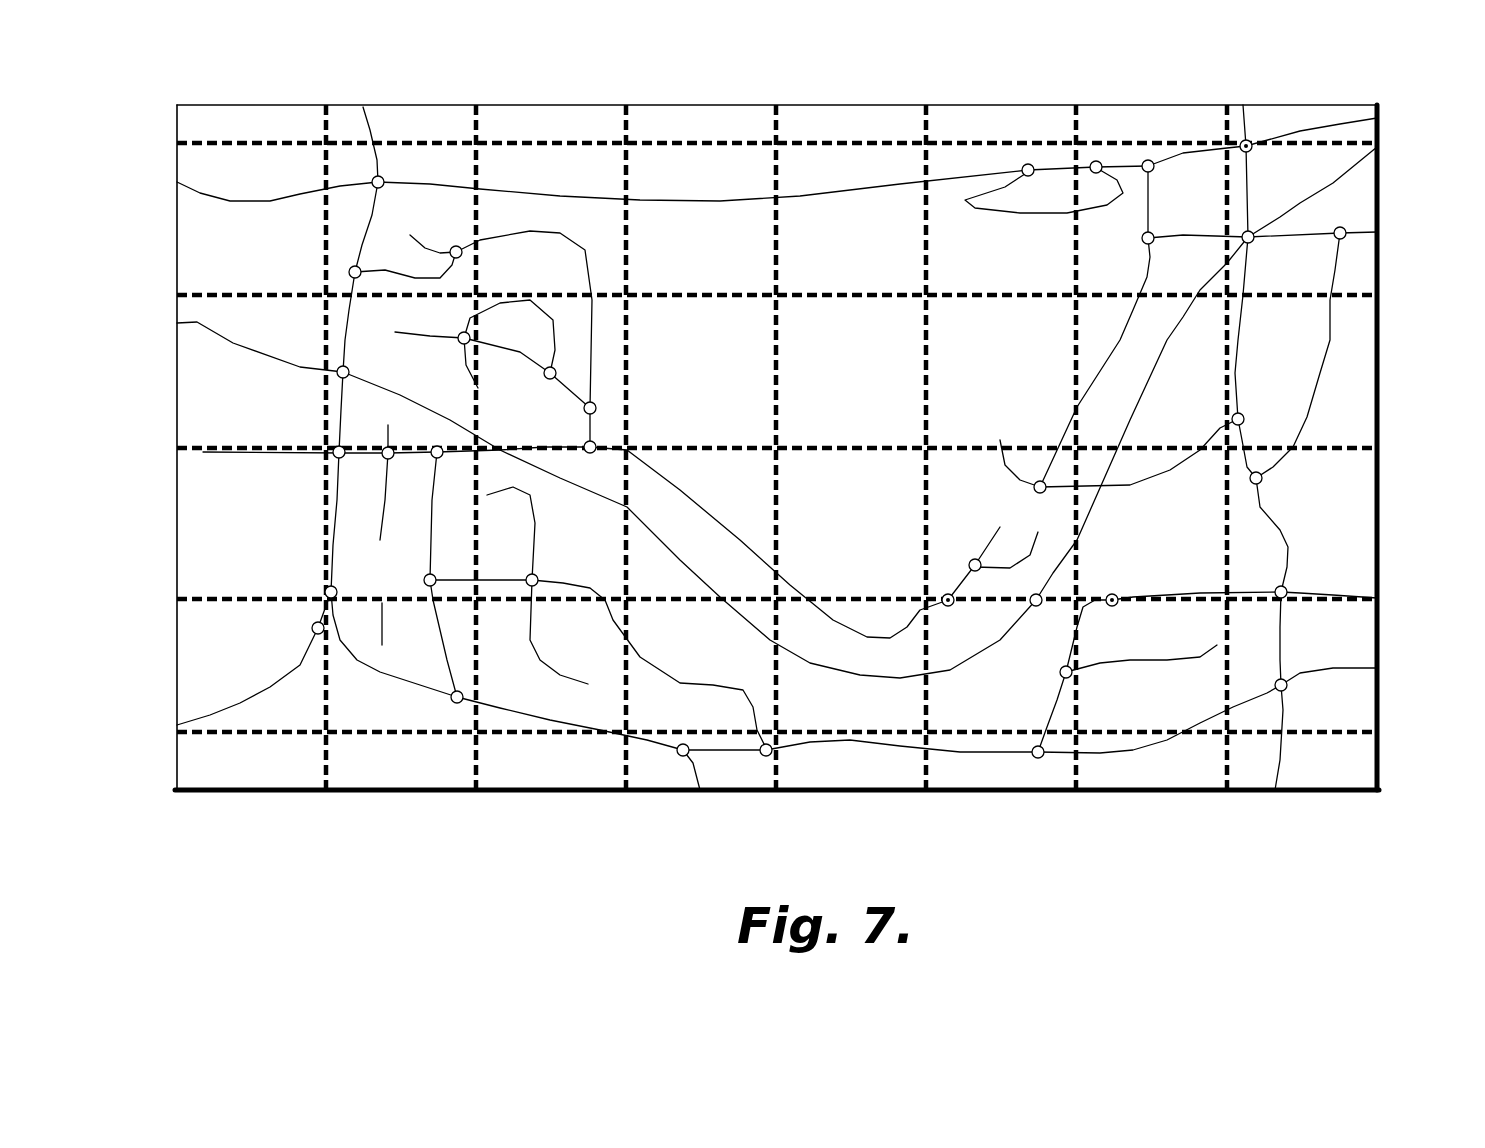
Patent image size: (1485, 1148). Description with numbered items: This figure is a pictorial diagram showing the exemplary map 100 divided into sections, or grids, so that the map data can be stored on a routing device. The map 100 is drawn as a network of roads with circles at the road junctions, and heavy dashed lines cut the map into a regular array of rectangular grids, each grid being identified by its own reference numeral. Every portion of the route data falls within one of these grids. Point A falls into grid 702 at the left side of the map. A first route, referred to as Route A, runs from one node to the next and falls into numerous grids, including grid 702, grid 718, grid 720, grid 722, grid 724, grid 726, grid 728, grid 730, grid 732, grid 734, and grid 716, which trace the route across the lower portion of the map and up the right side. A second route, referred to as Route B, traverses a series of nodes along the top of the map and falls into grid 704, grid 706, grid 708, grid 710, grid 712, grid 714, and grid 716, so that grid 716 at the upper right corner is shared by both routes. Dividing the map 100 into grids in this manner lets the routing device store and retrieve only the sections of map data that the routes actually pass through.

The map 100 is at (813, 105).
The grid 702 is at (326, 327).
The grid 704 is at (398, 145).
The grid 706 is at (511, 145).
The grid 708 is at (662, 145).
The grid 710 is at (867, 145).
The grid 712 is at (978, 145).
The grid 714 is at (1110, 145).
The grid 716 is at (1360, 205).
The grid 718 is at (500, 403).
The grid 720 is at (566, 605).
The grid 722 is at (670, 605).
The grid 724 is at (740, 726).
The grid 726 is at (892, 726).
The grid 728 is at (968, 728).
The grid 730 is at (1014, 595).
The grid 732 is at (1163, 588).
The grid 734 is at (1220, 396).